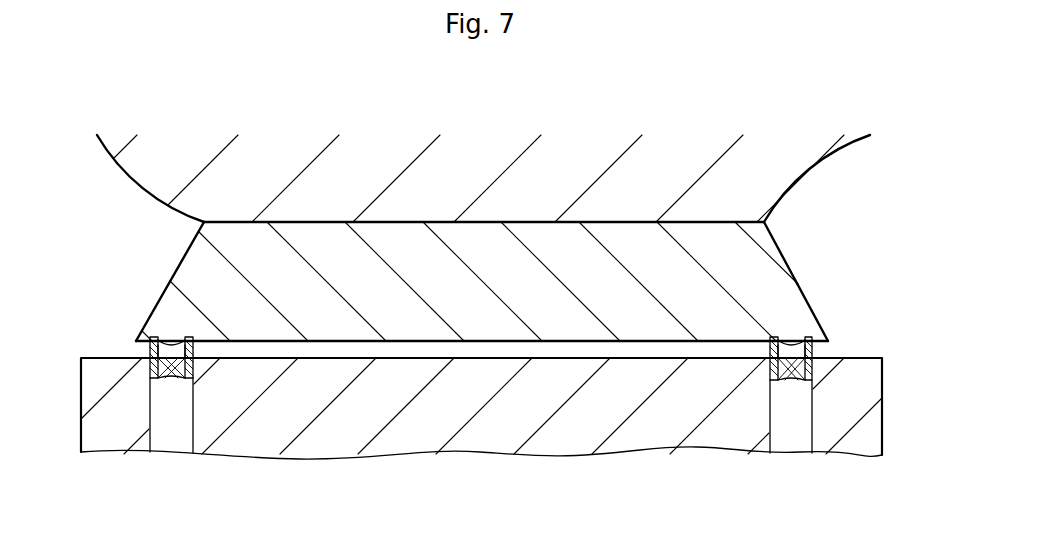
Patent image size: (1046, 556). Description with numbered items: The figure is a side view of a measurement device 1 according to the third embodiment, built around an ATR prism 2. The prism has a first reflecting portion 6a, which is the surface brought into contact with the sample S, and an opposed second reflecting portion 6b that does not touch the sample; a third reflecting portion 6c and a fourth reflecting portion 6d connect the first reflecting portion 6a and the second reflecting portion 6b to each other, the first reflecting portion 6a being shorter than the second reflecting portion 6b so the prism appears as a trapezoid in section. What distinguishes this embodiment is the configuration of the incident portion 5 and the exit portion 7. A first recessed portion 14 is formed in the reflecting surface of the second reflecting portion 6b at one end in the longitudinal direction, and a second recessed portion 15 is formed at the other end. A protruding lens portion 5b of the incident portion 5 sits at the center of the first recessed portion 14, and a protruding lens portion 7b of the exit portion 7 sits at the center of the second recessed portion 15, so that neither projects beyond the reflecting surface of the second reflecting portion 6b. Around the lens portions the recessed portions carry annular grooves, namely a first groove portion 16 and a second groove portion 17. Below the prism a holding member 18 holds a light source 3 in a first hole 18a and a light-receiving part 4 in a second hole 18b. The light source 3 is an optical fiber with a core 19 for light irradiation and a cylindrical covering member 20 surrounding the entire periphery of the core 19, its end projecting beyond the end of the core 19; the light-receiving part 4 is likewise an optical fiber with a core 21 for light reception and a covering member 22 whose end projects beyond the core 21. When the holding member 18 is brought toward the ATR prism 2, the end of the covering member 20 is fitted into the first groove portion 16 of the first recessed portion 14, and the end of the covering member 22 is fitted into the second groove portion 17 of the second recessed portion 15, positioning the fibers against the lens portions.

The measurement device 1 is at (464, 150).
The sample S is at (120, 191).
The ATR prism 2 is at (138, 387).
The light source 3 is at (139, 388).
The light-receiving part 4 is at (686, 394).
The incident portion 5 is at (166, 338).
The lens portion 5b is at (196, 350).
The first reflecting portion 6a is at (404, 221).
The second reflecting portion 6b is at (429, 343).
The third reflecting portion 6c is at (186, 250).
The fourth reflecting portion 6d is at (781, 250).
The exit portion 7 is at (815, 392).
The lens portion 7b is at (770, 343).
The first recessed portion 14 is at (170, 348).
The second recessed portion 15 is at (795, 348).
The first groove portion 16 is at (151, 352).
The second groove portion 17 is at (814, 346).
The holding member 18 is at (883, 366).
The first hole 18a is at (155, 408).
The second hole 18b is at (809, 412).
The core 19 is at (190, 370).
The covering member 20 is at (196, 405).
The core 21 is at (776, 370).
The covering member 22 is at (770, 418).